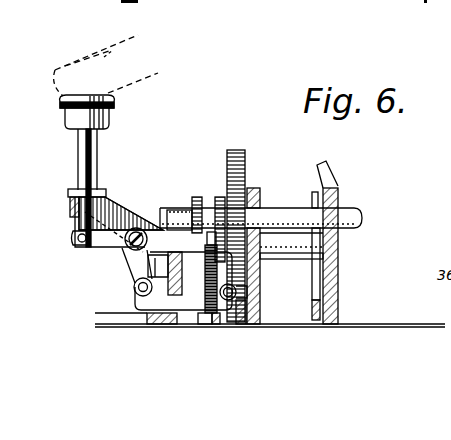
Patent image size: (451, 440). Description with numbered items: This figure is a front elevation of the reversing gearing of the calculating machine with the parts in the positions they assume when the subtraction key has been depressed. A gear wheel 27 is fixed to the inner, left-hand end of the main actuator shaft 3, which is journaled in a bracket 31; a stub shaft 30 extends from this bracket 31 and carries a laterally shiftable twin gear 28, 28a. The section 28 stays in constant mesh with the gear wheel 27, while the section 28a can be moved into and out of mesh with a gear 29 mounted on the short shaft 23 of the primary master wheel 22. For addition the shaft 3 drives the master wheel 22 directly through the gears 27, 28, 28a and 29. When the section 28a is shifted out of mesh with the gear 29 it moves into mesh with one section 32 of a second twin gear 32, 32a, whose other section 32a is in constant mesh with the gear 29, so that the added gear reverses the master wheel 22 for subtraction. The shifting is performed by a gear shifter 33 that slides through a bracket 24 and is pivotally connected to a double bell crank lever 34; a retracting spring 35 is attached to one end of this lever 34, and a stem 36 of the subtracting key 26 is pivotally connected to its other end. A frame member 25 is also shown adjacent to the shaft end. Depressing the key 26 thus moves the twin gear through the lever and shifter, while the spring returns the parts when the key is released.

The main actuator shaft 3 is at (357, 208).
The primary master wheel 22 is at (313, 198).
The short shaft 23 is at (289, 258).
The bracket 24 is at (170, 208).
The frame post 25 is at (340, 245).
The subtracting key 26 is at (58, 102).
The gear wheel 27 is at (236, 150).
The twin gear section 28 is at (239, 326).
The twin gear section 28a is at (216, 326).
The gear 29 is at (180, 280).
The stub shaft 30 is at (246, 291).
The bracket 31 is at (255, 191).
The twin gear section 32 is at (220, 197).
The twin gear section 32a is at (200, 197).
The gear shifter 33 is at (142, 310).
The double bell crank lever 34 is at (116, 250).
The retracting spring 35 is at (203, 300).
The stem 36 is at (78, 164).